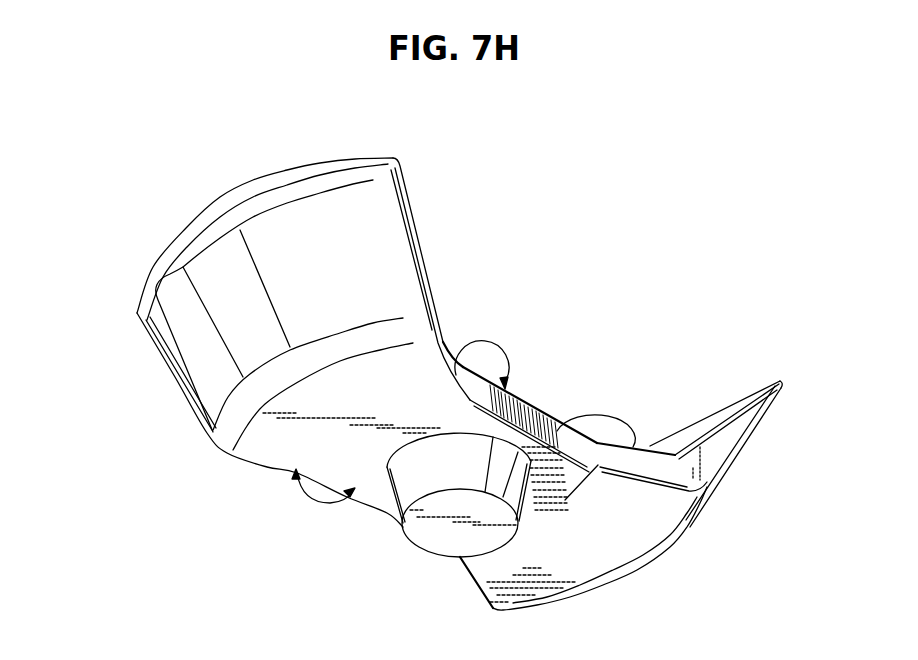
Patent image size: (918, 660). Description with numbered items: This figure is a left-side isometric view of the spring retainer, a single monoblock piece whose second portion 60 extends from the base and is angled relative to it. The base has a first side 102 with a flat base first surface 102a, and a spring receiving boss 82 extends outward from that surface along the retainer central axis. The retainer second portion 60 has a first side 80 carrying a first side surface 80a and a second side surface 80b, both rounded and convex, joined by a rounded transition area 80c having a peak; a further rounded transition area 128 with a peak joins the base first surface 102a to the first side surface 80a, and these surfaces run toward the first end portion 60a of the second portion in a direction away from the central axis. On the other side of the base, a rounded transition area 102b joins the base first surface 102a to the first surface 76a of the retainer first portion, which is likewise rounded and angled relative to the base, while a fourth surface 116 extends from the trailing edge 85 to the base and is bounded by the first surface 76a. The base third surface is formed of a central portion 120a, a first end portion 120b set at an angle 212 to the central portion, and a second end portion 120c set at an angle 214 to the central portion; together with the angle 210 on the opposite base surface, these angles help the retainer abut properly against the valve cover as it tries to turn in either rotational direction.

The retainer second portion 60 is at (433, 350).
The first end portion of the retainer second portion 60a is at (120, 312).
The first side of the second portion 80 is at (258, 308).
The first side surface of the retainer second portion 80a is at (362, 240).
The second side surface of the retainer second portion 80b is at (230, 203).
The rounded transition area 80c is at (341, 180).
The rounded transition area 128 is at (214, 437).
The central portion of the base third surface 120a is at (552, 428).
The first end portion of the base third surface 120b is at (651, 460).
The second end portion of the base third surface 120c is at (455, 336).
The angle 212 is at (631, 449).
The angle 214 is at (499, 346).
The angle 210 is at (313, 502).
The first side of the base 102 is at (520, 466).
The base first surface 102a is at (647, 503).
The rounded transition area 102b is at (690, 523).
The spring receiving boss 82 is at (395, 522).
The trailing edge 85 is at (780, 378).
The fourth surface 116 is at (737, 428).
The first surface of the first side 76a is at (722, 483).